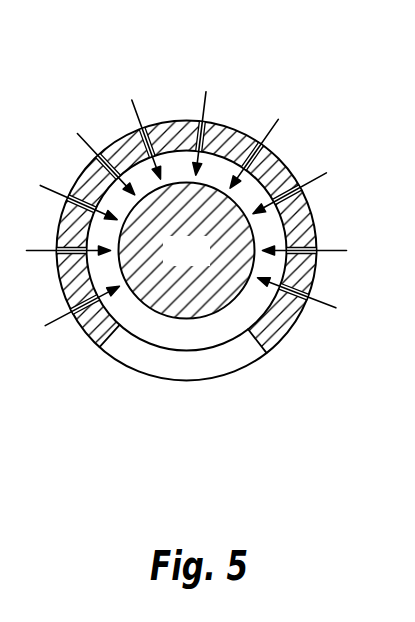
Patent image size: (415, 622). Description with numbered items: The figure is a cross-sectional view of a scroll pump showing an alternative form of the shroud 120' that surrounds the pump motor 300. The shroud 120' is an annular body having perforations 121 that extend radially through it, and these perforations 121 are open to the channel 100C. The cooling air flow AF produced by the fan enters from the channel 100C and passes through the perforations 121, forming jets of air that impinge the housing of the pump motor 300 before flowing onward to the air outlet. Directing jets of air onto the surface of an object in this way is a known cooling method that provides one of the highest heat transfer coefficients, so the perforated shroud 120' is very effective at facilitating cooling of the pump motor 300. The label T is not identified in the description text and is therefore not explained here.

The channel 100C is at (212, 34).
The cooling air flow AF is at (187, 209).
The perforations 121 is at (293, 187).
The gap thickness T is at (282, 233).
The shroud 120' is at (223, 236).
The pump motor 300 is at (205, 262).